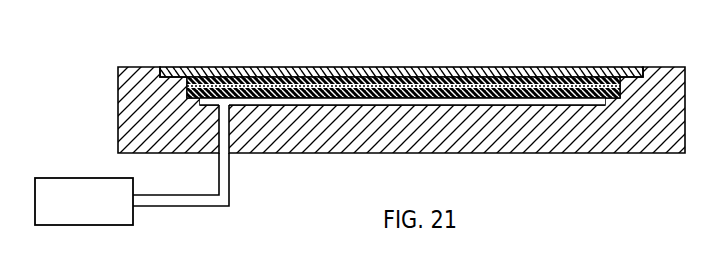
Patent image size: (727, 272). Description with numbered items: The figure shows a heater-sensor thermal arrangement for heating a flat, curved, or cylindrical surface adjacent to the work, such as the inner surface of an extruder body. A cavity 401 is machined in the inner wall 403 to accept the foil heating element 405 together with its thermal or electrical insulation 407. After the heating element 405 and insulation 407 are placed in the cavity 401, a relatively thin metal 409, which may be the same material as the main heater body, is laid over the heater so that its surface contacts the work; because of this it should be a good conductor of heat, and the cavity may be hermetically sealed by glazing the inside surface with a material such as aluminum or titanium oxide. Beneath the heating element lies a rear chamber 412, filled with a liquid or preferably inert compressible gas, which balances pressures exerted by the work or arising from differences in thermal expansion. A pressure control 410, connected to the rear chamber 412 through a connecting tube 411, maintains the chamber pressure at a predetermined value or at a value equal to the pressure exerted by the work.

The cavity 401 is at (197, 80).
The inner wall 403 is at (142, 76).
The foil heating element 405 is at (415, 77).
The thin metal 409 is at (480, 75).
The thermal or electrical insulation 407 is at (562, 78).
The rear chamber 412 is at (270, 102).
The connecting tube 411 is at (187, 204).
The pressure control 410 is at (103, 224).